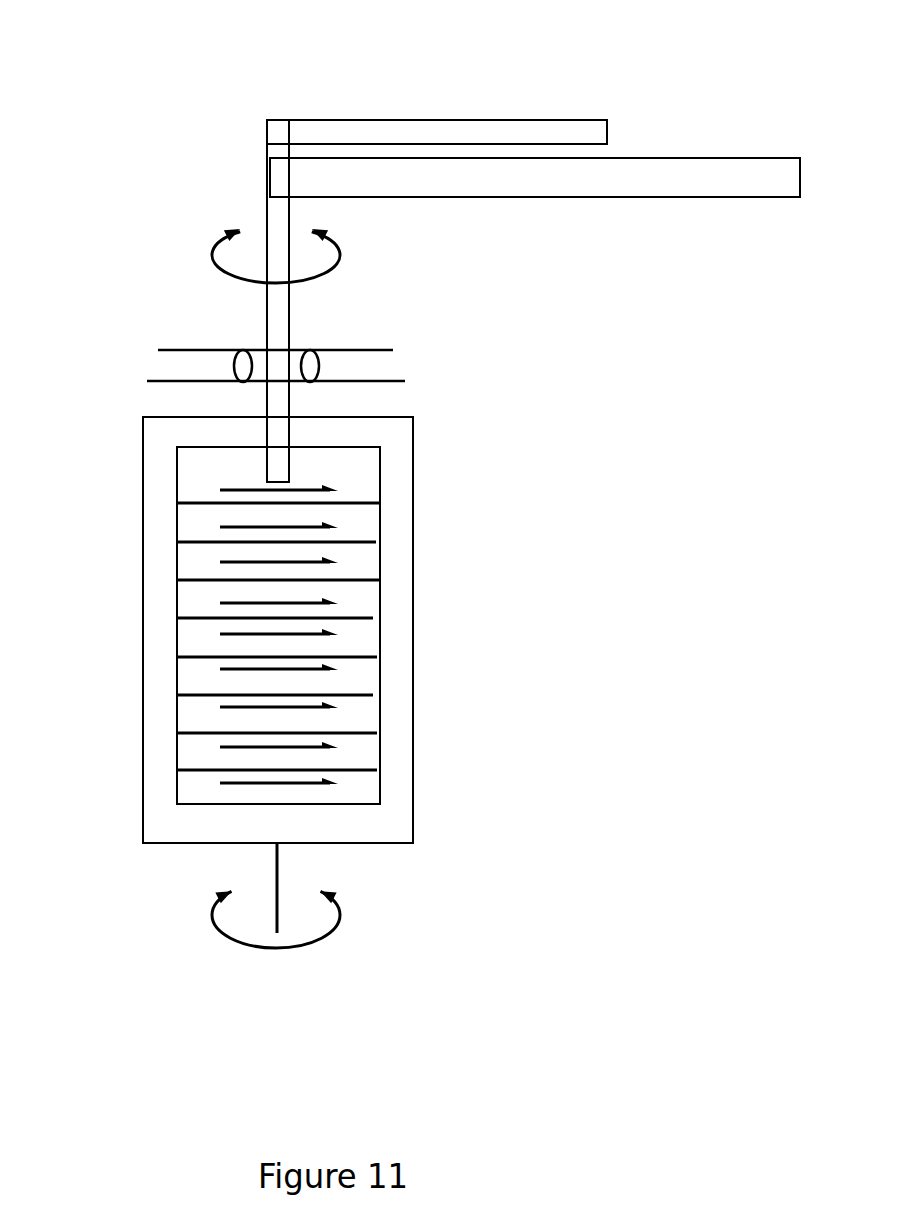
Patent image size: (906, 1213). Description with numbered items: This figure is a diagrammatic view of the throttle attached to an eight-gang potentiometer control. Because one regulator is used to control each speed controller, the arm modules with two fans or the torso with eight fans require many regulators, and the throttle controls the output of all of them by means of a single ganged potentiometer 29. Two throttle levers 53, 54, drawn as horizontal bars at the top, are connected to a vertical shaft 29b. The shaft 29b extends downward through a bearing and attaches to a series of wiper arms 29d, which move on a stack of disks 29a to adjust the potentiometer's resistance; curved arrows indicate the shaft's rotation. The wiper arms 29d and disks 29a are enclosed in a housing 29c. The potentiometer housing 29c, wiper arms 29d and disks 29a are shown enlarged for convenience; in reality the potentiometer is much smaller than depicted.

The ganged potentiometer 29 is at (294, 630).
The disks 29a is at (188, 597).
The shaft 29b is at (275, 235).
The housing 29c is at (413, 673).
The wiper arms 29d is at (85, 537).
The throttle lever 53 is at (548, 197).
The throttle lever 54 is at (437, 76).